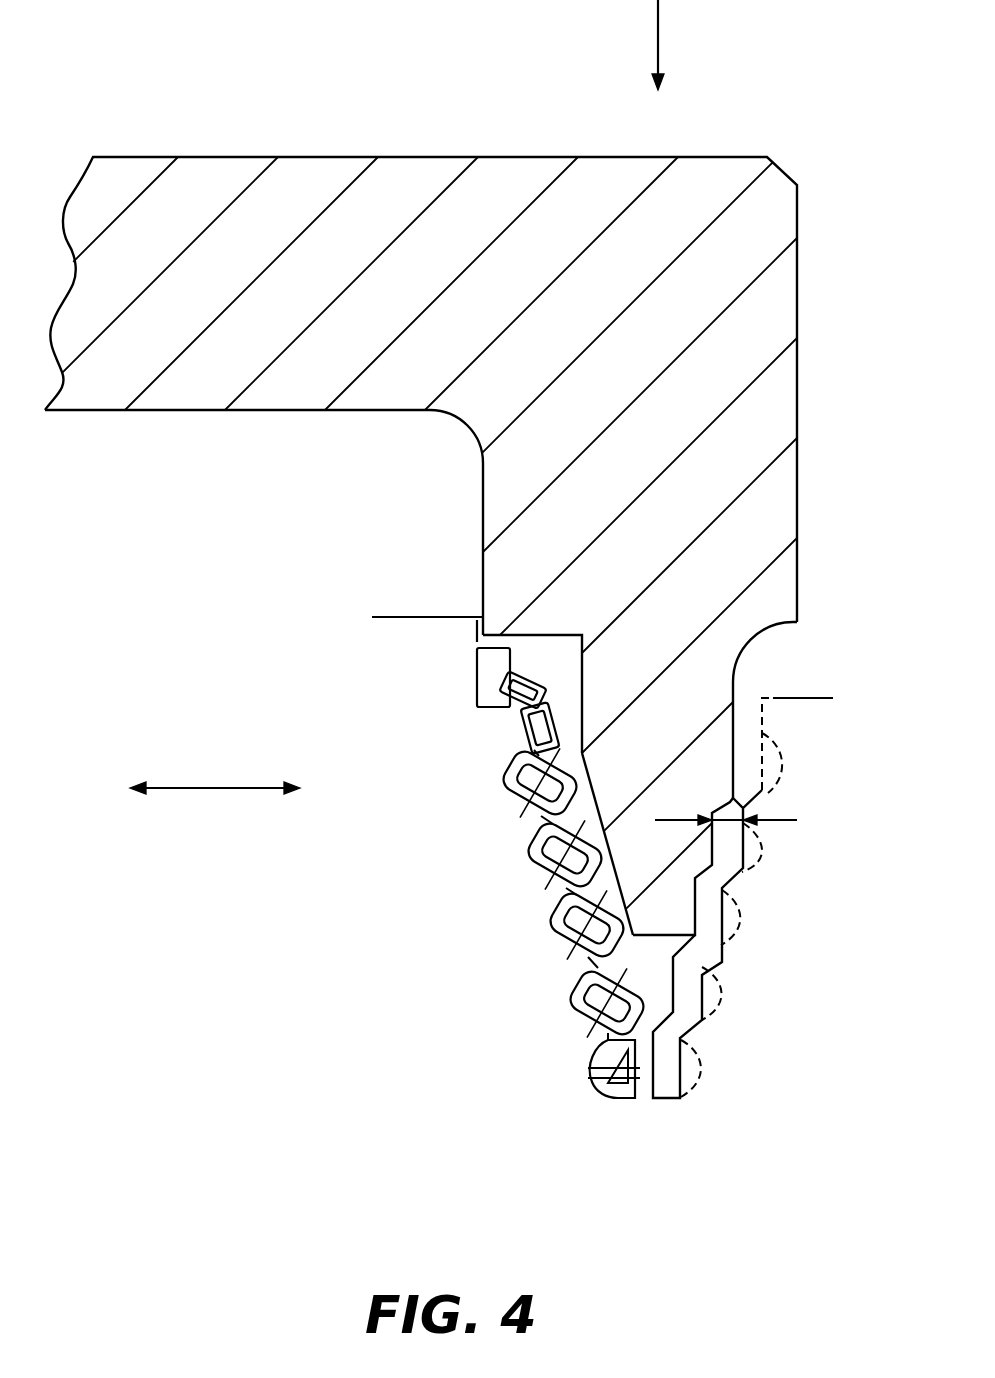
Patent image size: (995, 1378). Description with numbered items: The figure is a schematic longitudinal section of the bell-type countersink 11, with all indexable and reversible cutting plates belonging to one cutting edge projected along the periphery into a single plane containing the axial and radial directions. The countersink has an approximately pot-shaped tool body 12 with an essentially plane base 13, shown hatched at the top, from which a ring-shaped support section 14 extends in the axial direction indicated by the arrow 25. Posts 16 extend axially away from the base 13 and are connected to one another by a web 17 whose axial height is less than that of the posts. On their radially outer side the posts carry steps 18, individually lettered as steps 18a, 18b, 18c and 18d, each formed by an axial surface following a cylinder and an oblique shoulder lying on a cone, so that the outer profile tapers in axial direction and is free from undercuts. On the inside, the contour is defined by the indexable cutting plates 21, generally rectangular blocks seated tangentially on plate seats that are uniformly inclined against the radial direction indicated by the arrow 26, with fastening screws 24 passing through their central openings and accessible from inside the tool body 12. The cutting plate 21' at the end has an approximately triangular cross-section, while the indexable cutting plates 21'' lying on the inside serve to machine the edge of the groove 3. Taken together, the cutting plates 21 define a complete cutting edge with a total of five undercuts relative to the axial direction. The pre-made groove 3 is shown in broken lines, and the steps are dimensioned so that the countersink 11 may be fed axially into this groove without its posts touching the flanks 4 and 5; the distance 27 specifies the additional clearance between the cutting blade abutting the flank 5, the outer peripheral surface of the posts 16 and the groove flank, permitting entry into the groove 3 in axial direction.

The groove 3 is at (763, 775).
The flank of the groove 4 is at (737, 900).
The flank of the groove 5 is at (522, 889).
The bell-type countersink 11 is at (350, 133).
The tool body 12 is at (787, 167).
The base 13 is at (308, 305).
The support section 14 is at (764, 653).
The posts 16 is at (630, 796).
The web 17 is at (700, 709).
The steps 18 is at (712, 904).
The step 18a is at (748, 816).
The step 18b is at (729, 892).
The step 18c is at (705, 965).
The step 18d is at (684, 1040).
The indexable cutting plates 21 is at (565, 863).
The cutting plate at the end 21' is at (600, 1100).
The indexable cutting plates lying on the inside 21'' is at (533, 634).
The screws 24 is at (580, 963).
The arrow indicating axial direction 25 is at (662, 37).
The arrow indicating radial direction 26 is at (215, 797).
The distance 27 is at (776, 822).